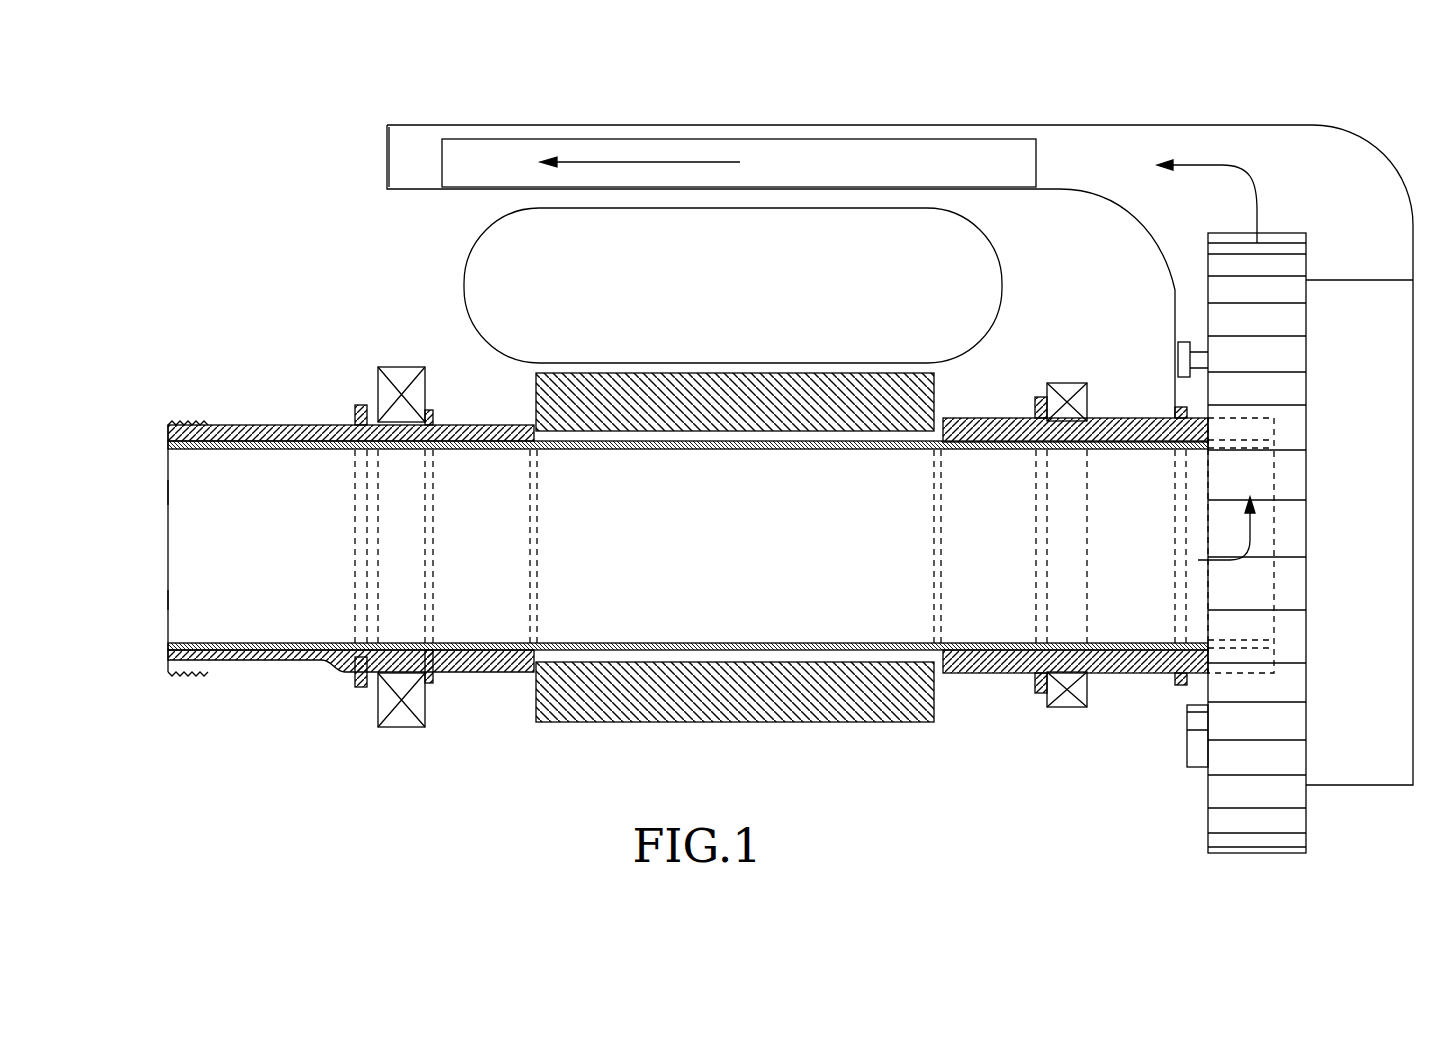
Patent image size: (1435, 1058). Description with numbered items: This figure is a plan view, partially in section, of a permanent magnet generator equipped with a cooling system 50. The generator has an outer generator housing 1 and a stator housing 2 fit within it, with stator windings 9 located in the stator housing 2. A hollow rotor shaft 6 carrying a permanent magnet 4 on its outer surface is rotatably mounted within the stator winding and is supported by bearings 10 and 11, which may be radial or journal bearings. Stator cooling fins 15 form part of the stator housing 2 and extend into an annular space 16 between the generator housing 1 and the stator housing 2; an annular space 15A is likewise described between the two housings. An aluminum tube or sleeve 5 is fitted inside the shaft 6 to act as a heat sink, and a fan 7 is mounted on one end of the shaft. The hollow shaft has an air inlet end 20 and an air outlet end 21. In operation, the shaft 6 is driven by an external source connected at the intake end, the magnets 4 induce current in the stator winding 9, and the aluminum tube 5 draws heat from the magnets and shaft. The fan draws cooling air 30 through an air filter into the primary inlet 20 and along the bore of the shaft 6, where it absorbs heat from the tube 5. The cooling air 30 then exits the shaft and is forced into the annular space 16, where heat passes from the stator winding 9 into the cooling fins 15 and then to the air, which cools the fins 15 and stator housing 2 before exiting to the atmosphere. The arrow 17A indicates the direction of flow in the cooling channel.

The generator housing 1 is at (955, 123).
The stator housing 2 is at (1100, 190).
The permanent magnet 4 is at (825, 412).
The aluminum tube or sleeve 5 is at (490, 643).
The rotor shaft 6 is at (292, 425).
The fan 7 is at (1290, 240).
The stator windings 9 is at (845, 232).
The bearing 10 is at (408, 727).
The bearing 11 is at (1070, 708).
The stator cooling fins 15 is at (487, 155).
The annular space 15A is at (410, 145).
The annular space 16 is at (1224, 165).
The coolant flow direction 17A is at (675, 162).
The air inlet end 20 is at (187, 492).
The air outlet end 21 is at (1278, 543).
The cooling air 30 is at (190, 596).
The cooling system 50 is at (771, 98).